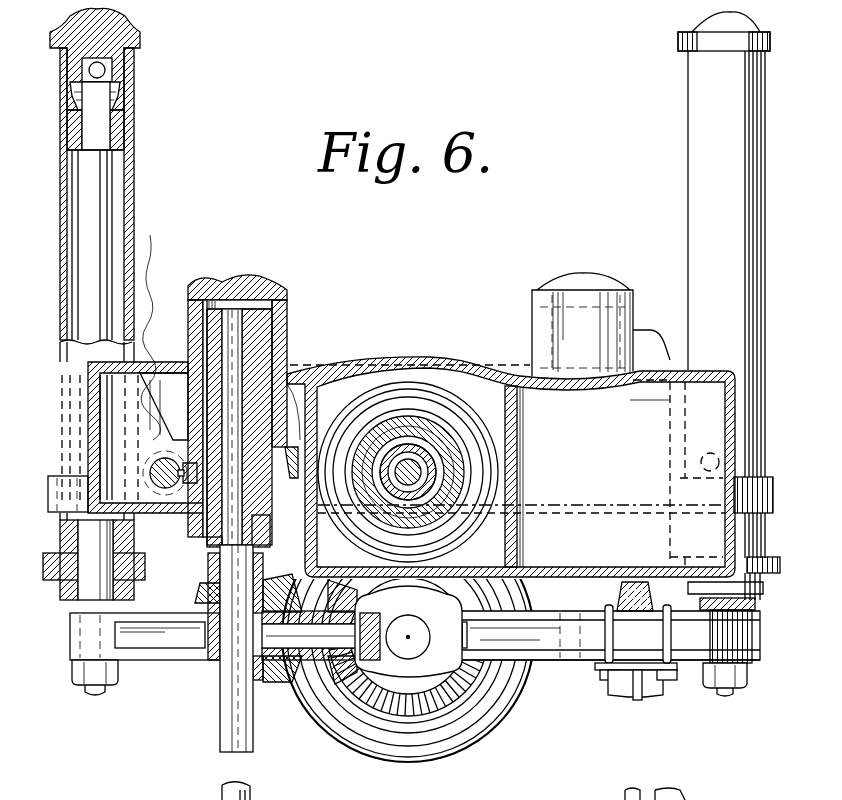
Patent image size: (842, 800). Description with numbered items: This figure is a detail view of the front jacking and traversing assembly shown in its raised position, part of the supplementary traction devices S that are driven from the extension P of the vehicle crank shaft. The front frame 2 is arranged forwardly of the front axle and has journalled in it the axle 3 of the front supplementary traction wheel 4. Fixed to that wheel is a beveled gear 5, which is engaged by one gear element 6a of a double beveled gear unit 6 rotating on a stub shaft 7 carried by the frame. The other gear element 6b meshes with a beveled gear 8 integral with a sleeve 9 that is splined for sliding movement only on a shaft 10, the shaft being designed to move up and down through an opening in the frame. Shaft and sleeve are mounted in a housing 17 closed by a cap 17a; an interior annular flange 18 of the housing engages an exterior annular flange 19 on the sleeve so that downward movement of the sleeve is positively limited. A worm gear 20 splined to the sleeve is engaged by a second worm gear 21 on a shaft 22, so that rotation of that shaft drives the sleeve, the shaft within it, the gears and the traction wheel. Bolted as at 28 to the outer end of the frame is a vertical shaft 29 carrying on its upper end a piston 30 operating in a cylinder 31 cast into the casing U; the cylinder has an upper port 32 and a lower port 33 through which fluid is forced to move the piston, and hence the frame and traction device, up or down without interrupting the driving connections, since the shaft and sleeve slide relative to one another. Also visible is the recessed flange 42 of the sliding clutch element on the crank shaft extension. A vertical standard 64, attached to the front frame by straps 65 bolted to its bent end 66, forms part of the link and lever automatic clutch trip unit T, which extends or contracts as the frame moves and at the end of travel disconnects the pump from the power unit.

The front frame 2 is at (580, 660).
The axle 3 is at (412, 652).
The front supplementary traction wheel 4 is at (446, 766).
The beveled gear 5 is at (345, 668).
The double beveled gear unit 6 is at (284, 666).
The gear element 6a is at (330, 652).
The gear element 6b is at (286, 600).
The stub shaft 7 is at (265, 650).
The beveled gear 8 is at (205, 603).
The sleeve 9 is at (210, 532).
The shaft 10 is at (250, 340).
The housing 17 is at (208, 320).
The cap 17a is at (265, 300).
The interior annular flange 18 is at (292, 470).
The exterior annular flange 19 is at (270, 312).
The worm gear 20 is at (396, 450).
The second worm gear 21 is at (154, 325).
The shaft 22 is at (168, 482).
The bolts 28 is at (100, 692).
The vertical shaft 29 is at (112, 184).
The piston 30 is at (134, 122).
The cylinder 31 is at (60, 205).
The upper port 32 is at (105, 68).
The lower port 33 is at (719, 462).
The recessed flange 42 is at (466, 470).
The vertical standard 64 is at (620, 602).
The straps 65 is at (690, 652).
The bent end 66 is at (662, 690).
The casing U is at (692, 248).
The extension of the crank shaft P is at (405, 462).
The supplementary traction devices S is at (378, 690).
The link and lever automatic clutch trip unit T is at (658, 594).